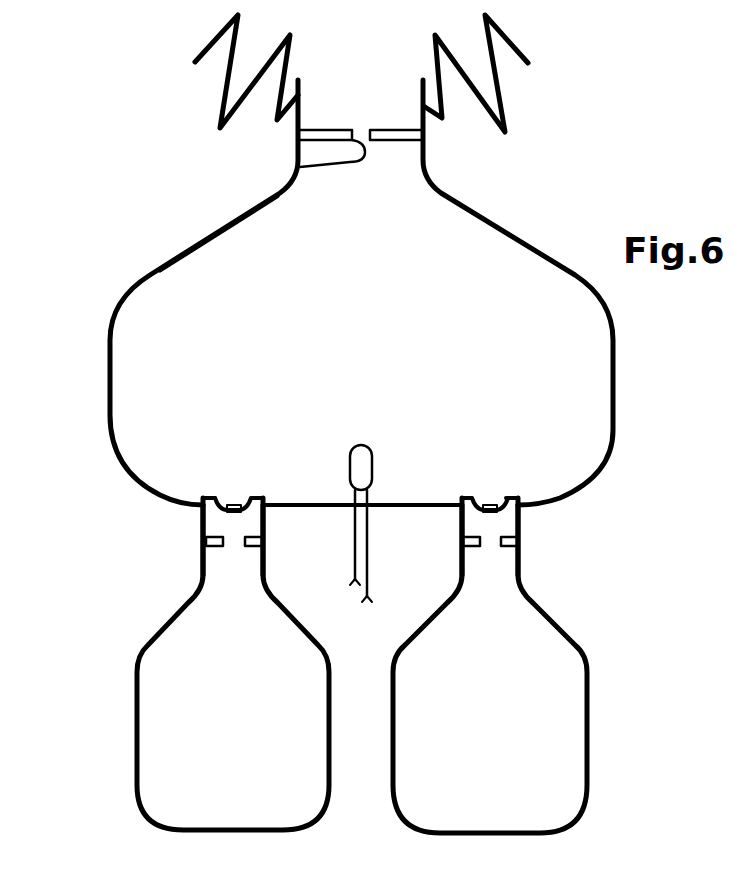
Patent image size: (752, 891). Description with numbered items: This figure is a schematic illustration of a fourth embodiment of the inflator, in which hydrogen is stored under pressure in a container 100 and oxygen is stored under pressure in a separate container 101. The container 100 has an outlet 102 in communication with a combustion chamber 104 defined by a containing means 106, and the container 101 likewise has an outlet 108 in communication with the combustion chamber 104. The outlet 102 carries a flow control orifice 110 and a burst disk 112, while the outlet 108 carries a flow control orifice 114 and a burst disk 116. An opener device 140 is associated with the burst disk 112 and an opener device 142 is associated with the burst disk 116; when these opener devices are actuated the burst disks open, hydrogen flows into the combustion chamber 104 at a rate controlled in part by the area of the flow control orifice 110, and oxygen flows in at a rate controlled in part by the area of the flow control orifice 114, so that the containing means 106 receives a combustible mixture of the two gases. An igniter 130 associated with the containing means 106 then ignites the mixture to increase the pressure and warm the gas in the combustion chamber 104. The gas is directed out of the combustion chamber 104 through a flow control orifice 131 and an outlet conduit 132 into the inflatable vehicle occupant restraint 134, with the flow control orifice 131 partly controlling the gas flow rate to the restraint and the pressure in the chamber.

The container 100 is at (138, 723).
The container 101 is at (587, 730).
The outlet 102 is at (207, 522).
The combustion chamber 104 is at (157, 373).
The containing means 106 is at (197, 240).
The outlet 108 is at (520, 520).
The flow control orifice 110 is at (217, 546).
The burst disk 112 is at (233, 505).
The flow control orifice 114 is at (520, 557).
The burst disk 116 is at (490, 508).
The igniter 130 is at (362, 458).
The flow control orifice 131 is at (355, 160).
The outlet conduit 132 is at (430, 125).
The inflatable vehicle occupant restraint 134 is at (507, 92).
The opener device 140 is at (203, 518).
The opener device 142 is at (520, 517).